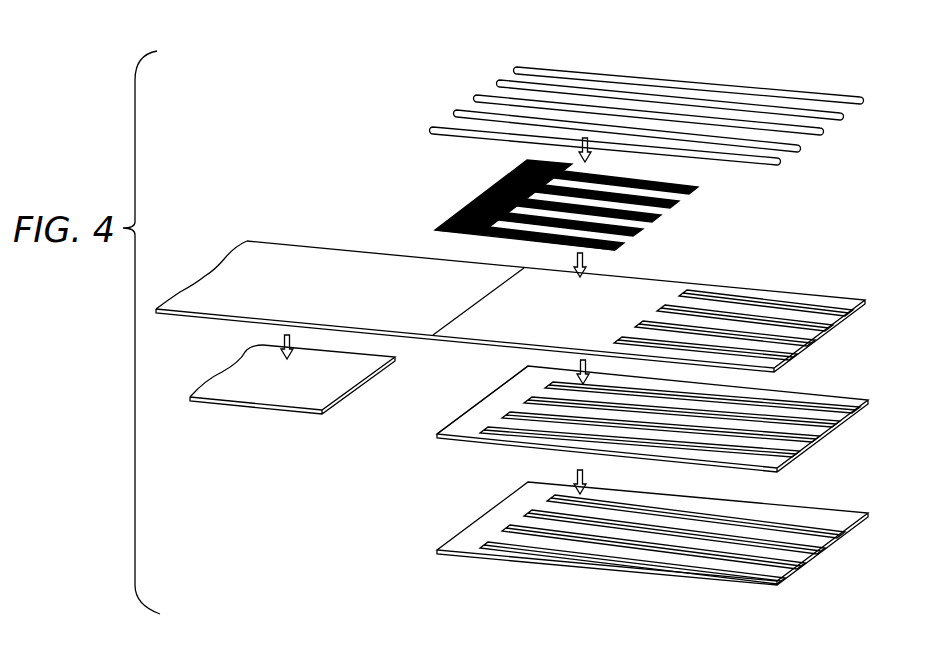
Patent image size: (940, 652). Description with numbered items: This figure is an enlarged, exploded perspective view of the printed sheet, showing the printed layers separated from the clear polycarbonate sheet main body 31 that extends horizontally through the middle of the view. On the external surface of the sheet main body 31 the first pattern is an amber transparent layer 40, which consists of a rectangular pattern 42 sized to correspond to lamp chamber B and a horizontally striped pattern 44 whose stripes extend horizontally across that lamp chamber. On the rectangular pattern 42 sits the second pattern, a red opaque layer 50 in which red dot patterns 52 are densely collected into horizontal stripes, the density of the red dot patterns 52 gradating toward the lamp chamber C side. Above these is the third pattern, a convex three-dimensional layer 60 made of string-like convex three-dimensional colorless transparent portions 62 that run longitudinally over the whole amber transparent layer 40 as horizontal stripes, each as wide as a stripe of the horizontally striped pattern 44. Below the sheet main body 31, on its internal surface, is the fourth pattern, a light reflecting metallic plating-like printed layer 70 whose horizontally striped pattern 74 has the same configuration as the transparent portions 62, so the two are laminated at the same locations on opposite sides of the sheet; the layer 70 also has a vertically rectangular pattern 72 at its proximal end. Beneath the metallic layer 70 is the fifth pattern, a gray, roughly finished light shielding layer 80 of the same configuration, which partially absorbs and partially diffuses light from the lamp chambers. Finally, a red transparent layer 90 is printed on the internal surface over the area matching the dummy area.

The sheet main body 31 is at (288, 240).
The amber transparent layer 40 is at (525, 306).
The rectangular pattern 42 is at (660, 276).
The horizontally striped pattern 44 is at (856, 293).
The red opaque layer 50 is at (536, 205).
The red dot patterns 52 is at (444, 218).
The convex three-dimensional layer 60 is at (647, 96).
The convex three-dimensional colorless transparent portions 62 is at (815, 53).
The metallic plating-like printed layer 70 is at (635, 432).
The plate portion 72 is at (468, 416).
The horizontally striped pattern 74 is at (758, 465).
The light shielding layer 80 is at (542, 571).
The red transparent layer 90 is at (281, 423).